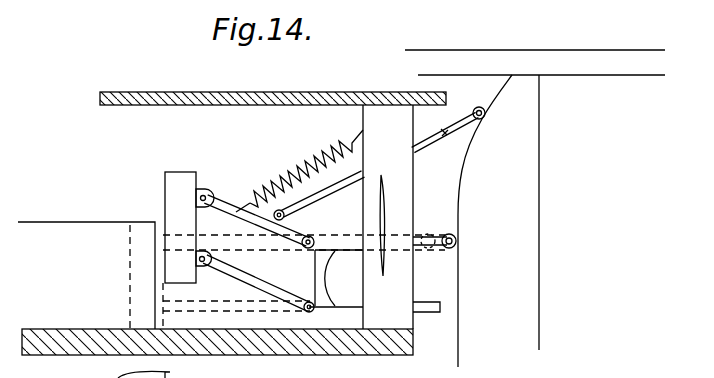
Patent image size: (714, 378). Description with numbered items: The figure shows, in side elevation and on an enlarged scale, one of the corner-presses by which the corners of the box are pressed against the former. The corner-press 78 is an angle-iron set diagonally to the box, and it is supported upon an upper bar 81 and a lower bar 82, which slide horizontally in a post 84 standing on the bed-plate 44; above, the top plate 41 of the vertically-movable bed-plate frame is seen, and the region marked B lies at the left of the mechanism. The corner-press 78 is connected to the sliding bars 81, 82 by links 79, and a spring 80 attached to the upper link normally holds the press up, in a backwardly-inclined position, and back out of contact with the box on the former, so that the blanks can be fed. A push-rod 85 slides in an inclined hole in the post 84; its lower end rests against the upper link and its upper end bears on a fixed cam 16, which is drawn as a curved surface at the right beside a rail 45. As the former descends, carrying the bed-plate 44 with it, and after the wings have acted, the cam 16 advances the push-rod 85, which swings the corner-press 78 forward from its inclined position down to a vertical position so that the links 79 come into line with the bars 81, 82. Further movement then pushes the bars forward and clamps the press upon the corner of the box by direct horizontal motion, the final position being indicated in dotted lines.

The top plate 41 is at (276, 104).
The rail 45 is at (538, 55).
The fixed cam 16 is at (485, 221).
The bed-plate 44 is at (83, 344).
The body region B is at (231, 275).
The corner-press 78 is at (188, 172).
The links 79 is at (246, 222).
The spring 80 is at (299, 171).
The push-rod 85 is at (331, 178).
The bar 81 is at (386, 217).
The post 84 is at (363, 130).
The bar 82 is at (340, 298).